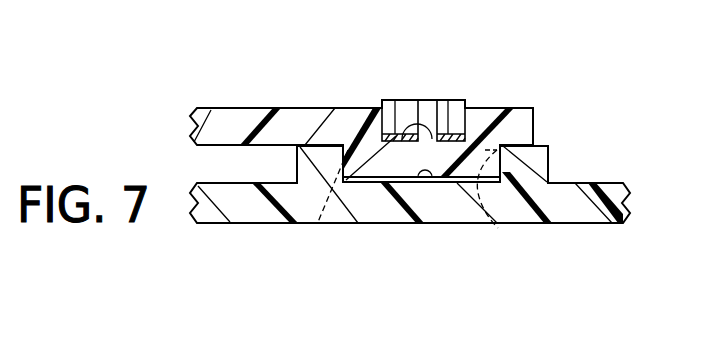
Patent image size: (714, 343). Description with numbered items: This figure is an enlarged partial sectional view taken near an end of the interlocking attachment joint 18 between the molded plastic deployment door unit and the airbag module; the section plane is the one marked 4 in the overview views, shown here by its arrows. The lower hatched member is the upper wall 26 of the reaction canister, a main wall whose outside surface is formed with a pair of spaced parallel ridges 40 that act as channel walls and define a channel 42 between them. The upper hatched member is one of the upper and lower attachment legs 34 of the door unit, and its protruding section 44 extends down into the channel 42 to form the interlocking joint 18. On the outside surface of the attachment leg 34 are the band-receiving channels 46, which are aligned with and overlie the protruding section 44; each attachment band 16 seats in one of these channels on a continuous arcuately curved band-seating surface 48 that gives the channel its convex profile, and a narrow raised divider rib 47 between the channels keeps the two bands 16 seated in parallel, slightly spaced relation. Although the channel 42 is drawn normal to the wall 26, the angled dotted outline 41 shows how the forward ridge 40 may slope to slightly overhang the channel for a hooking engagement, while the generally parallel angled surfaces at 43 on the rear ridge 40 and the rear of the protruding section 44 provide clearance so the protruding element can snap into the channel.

The section line 4- 4 is at (457, 81).
The attachment band 16 is at (440, 104).
The interlocking joint 18 is at (592, 73).
The upper wall 26 is at (607, 190).
The upper and lower attachment legs 34 is at (200, 118).
The ridges 40 is at (310, 160).
The angled dotted outline 41 is at (316, 234).
The channel 42 is at (437, 183).
The angled surfaces 43 is at (499, 230).
The protruding section 44 is at (347, 214).
The band-receiving channel 46 is at (382, 99).
The divider rib 47 is at (429, 120).
The band-seating surface 48 is at (457, 103).